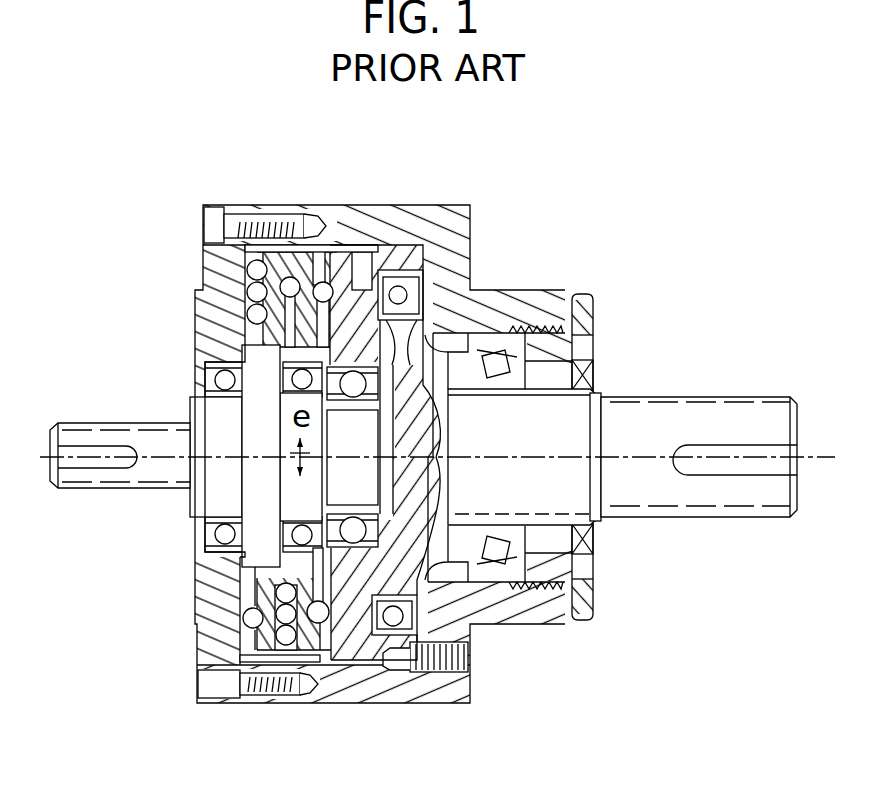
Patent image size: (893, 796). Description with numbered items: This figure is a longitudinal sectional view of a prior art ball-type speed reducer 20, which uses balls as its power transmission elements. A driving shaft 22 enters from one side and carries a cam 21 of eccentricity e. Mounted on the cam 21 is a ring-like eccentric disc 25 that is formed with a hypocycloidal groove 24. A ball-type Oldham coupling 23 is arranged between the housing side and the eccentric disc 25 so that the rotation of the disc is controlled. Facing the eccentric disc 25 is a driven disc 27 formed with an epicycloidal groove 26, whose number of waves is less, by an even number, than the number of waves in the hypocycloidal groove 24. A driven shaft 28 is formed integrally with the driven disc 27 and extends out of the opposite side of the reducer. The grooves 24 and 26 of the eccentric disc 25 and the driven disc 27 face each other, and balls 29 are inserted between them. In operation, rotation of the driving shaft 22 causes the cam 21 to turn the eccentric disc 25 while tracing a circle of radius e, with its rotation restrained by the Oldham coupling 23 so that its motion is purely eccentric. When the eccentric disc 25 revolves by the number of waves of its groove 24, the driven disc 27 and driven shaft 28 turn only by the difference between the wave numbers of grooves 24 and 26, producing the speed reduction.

The speed reducer 20 is at (518, 247).
The cam 21 is at (290, 493).
The driving shaft 22 is at (80, 491).
The ball-type Oldham coupling 23 is at (232, 591).
The hypocycloidal groove 24 is at (309, 608).
The eccentric disc 25 is at (317, 662).
The epicycloidal groove 26 is at (322, 260).
The driven disc 27 is at (368, 243).
The driven shaft 28 is at (678, 397).
The balls 29 is at (329, 604).